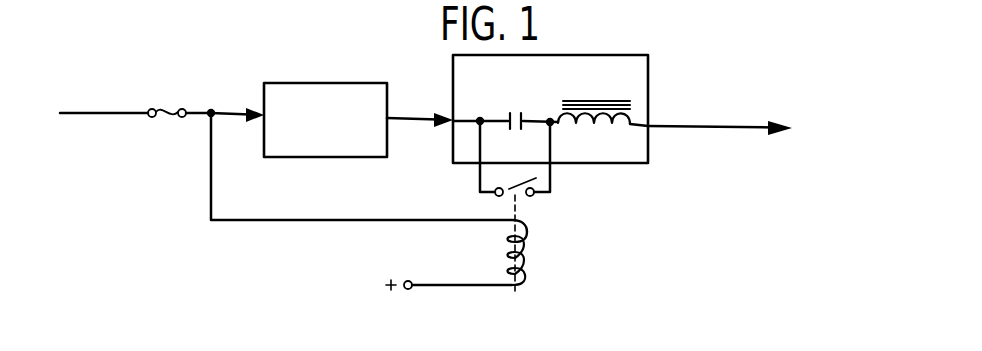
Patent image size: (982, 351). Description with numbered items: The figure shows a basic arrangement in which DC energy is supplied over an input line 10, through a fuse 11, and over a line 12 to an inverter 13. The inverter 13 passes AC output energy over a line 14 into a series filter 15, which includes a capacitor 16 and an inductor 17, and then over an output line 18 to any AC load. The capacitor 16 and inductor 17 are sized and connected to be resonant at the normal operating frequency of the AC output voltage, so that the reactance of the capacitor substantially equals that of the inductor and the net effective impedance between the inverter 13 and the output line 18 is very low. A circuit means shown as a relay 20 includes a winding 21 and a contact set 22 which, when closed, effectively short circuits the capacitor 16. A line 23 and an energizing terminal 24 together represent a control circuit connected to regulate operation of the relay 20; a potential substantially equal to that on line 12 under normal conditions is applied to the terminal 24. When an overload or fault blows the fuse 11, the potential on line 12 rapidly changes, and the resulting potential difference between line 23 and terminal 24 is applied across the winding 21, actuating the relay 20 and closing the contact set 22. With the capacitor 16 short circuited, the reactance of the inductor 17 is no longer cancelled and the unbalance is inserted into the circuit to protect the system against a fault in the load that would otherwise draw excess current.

The input line 10 is at (104, 99).
The fuse 11 is at (167, 99).
The line 12 is at (225, 104).
The inverter 13 is at (325, 109).
The line 14 is at (420, 111).
The series filter 15 is at (550, 99).
The capacitor 16 is at (515, 136).
The inductor 17 is at (594, 130).
The output line 18 is at (769, 129).
The relay 20 is at (585, 251).
The winding 21 is at (505, 258).
The contact set 22 is at (498, 205).
The line 23 is at (369, 172).
The energizing terminal 24 is at (449, 271).